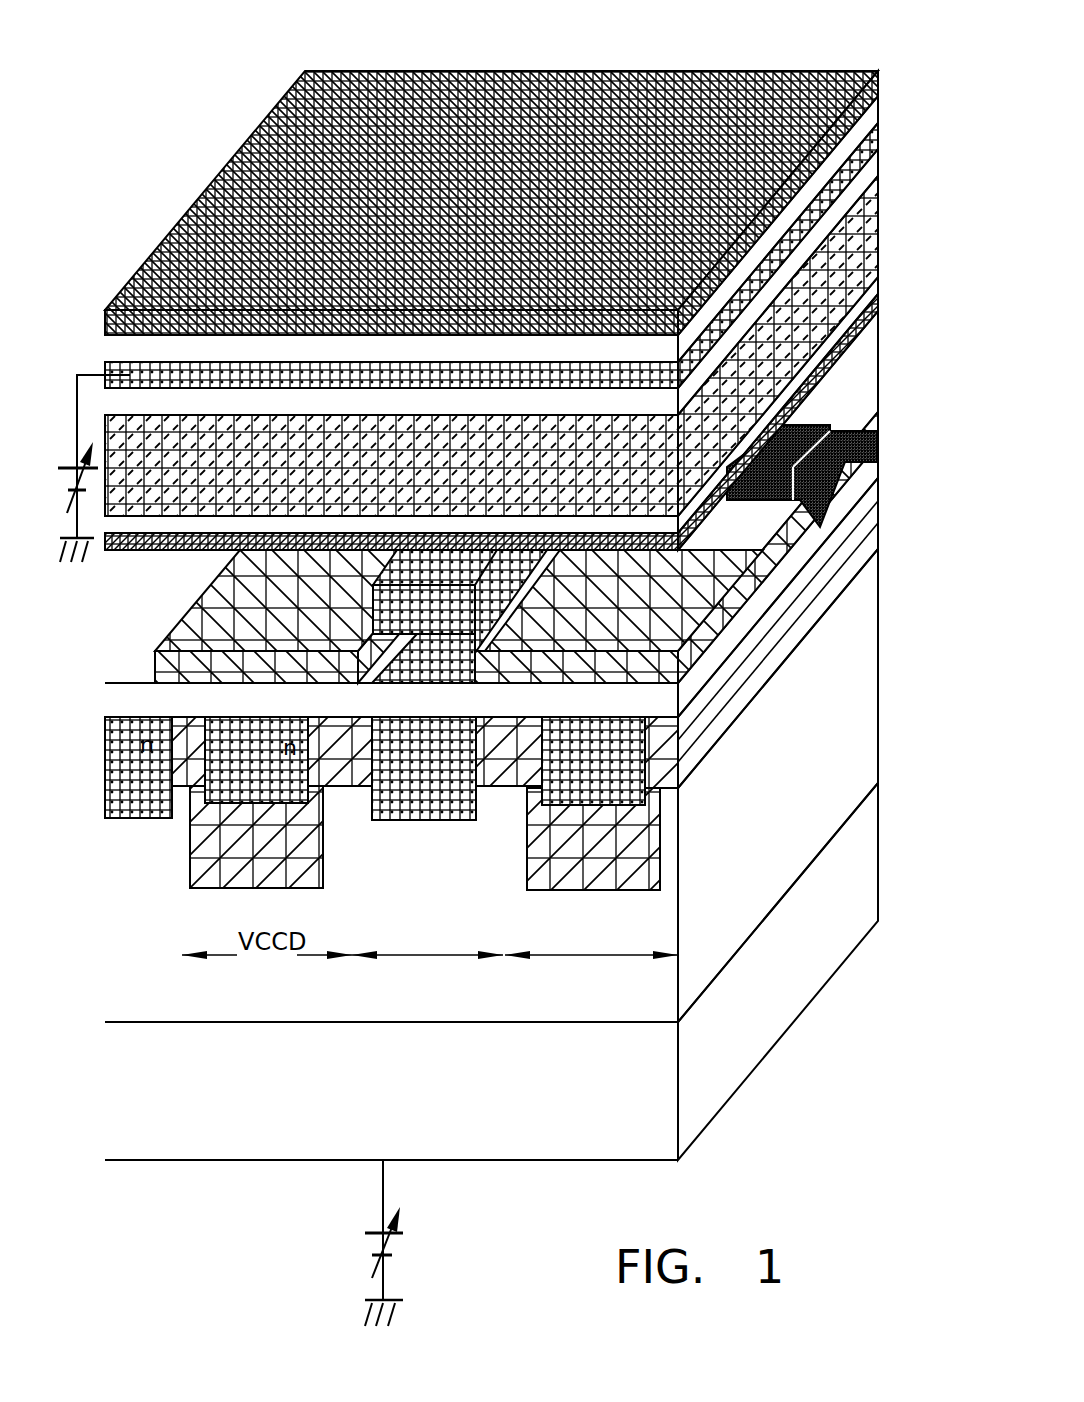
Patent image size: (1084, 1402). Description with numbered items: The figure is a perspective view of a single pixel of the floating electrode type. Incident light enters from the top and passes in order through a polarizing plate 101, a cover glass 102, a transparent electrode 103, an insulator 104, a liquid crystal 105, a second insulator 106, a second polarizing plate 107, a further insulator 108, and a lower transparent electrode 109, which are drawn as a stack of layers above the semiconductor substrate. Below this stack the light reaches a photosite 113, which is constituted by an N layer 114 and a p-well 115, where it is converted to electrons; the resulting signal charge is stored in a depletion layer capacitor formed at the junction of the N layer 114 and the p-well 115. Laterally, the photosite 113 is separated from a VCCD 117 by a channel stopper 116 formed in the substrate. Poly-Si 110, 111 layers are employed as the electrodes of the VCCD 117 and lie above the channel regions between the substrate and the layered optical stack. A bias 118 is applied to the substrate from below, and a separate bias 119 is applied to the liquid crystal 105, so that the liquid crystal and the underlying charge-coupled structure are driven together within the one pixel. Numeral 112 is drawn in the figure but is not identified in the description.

The polarizing plate 101 is at (830, 127).
The cover glass 102 is at (863, 130).
The transparent electrode 103 is at (873, 147).
The insulator 104 is at (867, 175).
The liquid crystal 105 is at (860, 235).
The insulator 106 is at (867, 293).
The polarizing plate 107 is at (870, 312).
The insulator 108 is at (857, 372).
The transparent electrode 109 is at (445, 618).
The poly-Si 110 is at (748, 542).
The poly-Si 111 is at (870, 463).
The gate insulating film 112 is at (753, 607).
The photosite 113 is at (413, 977).
The N layer 114 is at (430, 807).
The p-well 115 is at (481, 615).
The channel stopper 116 is at (350, 780).
The VCCD 117 is at (591, 838).
The bias 118 is at (395, 1248).
The bias 119 is at (92, 482).